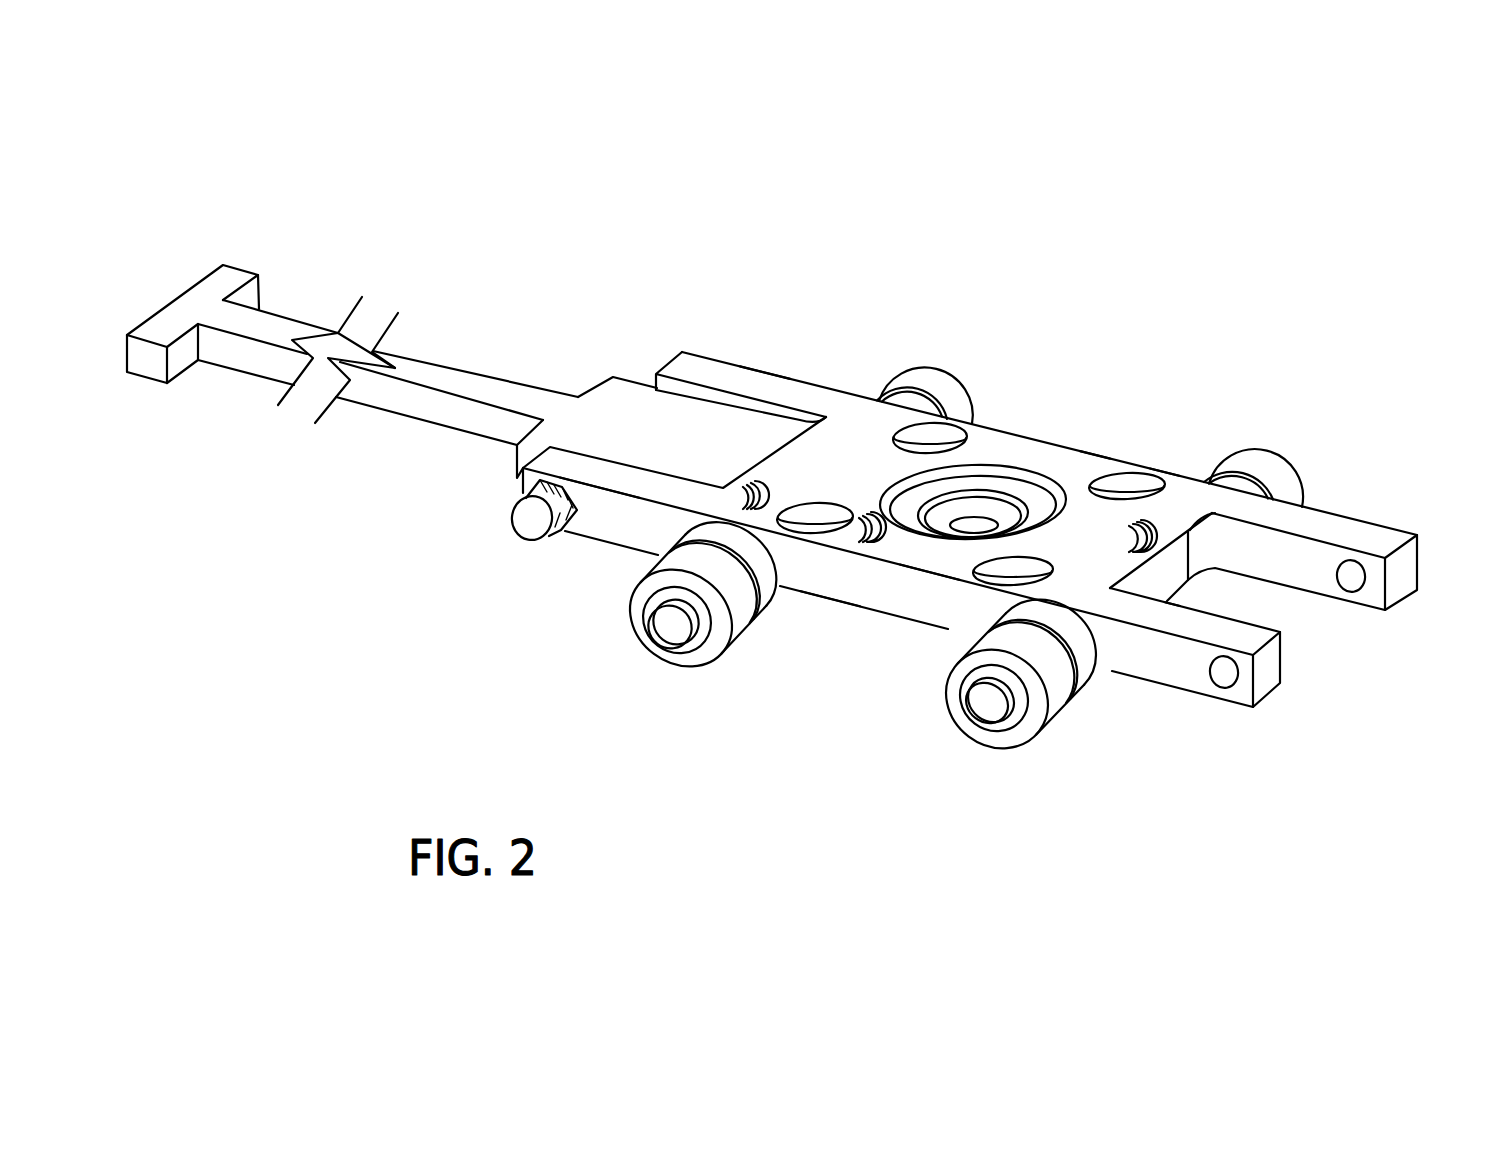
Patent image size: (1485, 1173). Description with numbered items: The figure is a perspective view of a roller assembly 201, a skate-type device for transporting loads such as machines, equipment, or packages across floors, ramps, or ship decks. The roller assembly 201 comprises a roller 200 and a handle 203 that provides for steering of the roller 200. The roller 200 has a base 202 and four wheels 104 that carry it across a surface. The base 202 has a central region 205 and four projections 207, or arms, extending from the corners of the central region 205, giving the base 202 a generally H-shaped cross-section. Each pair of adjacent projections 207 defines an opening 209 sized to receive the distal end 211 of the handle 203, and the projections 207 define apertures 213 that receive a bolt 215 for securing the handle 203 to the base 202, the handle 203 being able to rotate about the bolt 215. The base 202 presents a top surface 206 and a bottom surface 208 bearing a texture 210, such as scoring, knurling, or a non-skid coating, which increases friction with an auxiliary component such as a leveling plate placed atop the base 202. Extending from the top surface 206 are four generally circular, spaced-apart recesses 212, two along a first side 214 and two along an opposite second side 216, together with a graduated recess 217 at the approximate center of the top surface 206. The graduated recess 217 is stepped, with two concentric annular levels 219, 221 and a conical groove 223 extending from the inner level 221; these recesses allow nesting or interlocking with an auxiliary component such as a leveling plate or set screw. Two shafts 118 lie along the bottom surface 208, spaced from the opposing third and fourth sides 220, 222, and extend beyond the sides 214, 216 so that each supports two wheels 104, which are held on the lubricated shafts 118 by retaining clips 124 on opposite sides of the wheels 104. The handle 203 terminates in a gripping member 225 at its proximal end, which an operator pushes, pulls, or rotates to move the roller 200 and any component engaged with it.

The roller 200 is at (1247, 410).
The roller assembly 201 is at (1013, 285).
The base 202 is at (1040, 445).
The handle 203 is at (433, 410).
The central region 205 is at (1160, 470).
The top surface 206 is at (824, 452).
The projections 207 is at (695, 353).
The bottom surface 208 is at (877, 652).
The opening 209 is at (1313, 607).
The texture 210 is at (857, 533).
The distal end 211 is at (632, 428).
The recesses 212 is at (797, 508).
The apertures 213 is at (1347, 575).
The first side 214 is at (623, 553).
The bolt 215 is at (528, 533).
The second side 216 is at (760, 370).
The graduated recess 217 is at (1087, 467).
The concentric level 219 is at (987, 485).
The third side 220 is at (1160, 587).
The concentric level 221 is at (1003, 512).
The fourth side 222 is at (755, 470).
The groove 223 is at (925, 533).
The gripping member 225 is at (222, 280).
The wheels 104 is at (683, 667).
The shafts 118 is at (665, 628).
The retaining clips 124 is at (703, 643).